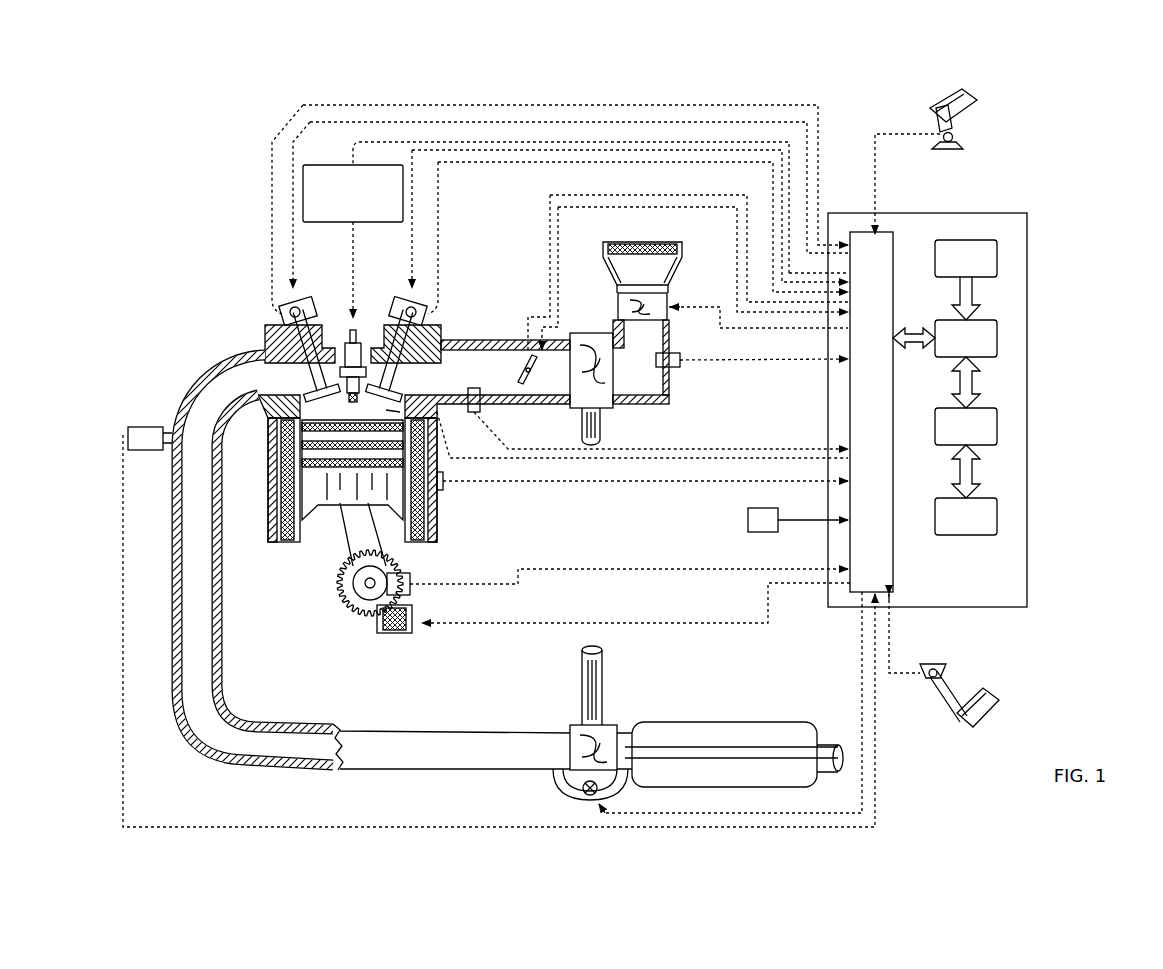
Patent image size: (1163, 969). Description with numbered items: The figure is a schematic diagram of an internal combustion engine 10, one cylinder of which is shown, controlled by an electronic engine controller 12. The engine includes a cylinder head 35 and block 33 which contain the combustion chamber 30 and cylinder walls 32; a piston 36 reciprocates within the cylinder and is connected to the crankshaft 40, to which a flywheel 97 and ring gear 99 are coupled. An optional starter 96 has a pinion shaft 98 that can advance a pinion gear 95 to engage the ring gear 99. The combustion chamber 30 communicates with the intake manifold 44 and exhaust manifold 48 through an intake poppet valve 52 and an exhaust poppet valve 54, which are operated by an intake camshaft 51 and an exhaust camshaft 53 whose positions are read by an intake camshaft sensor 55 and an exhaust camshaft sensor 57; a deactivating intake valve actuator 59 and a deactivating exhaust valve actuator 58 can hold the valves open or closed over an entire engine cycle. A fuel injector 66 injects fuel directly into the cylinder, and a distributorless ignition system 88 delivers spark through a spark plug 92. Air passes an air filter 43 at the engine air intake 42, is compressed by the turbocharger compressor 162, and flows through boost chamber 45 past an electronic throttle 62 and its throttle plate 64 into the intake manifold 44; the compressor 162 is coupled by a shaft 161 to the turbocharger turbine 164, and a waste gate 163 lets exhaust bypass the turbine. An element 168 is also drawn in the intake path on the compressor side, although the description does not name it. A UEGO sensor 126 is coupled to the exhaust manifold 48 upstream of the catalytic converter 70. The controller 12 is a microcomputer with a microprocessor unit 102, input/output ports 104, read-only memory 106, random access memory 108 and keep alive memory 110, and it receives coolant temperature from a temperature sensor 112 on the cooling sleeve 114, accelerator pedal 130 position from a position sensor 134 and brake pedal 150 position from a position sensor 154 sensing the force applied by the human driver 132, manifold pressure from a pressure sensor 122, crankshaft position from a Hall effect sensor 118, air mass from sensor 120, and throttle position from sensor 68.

The internal combustion engine 10 is at (210, 284).
The electronic engine controller 12 is at (1027, 222).
The combustion chamber 30 is at (270, 500).
The cylinder walls 32 is at (306, 525).
The block 33 is at (266, 450).
The cylinder head 35 is at (262, 324).
The piston 36 is at (337, 500).
The crankshaft 40 is at (360, 600).
The engine air intake 42 is at (663, 252).
The air filter 43 is at (660, 254).
The intake manifold 44 is at (460, 386).
The boost chamber 45 is at (560, 381).
The exhaust manifold 48 is at (244, 386).
The intake camshaft 51 is at (404, 300).
The intake poppet valve 52 is at (403, 322).
The exhaust camshaft 53 is at (300, 298).
The exhaust poppet valve 54 is at (290, 333).
The intake camshaft sensor 55 is at (420, 305).
The exhaust camshaft sensor 57 is at (284, 316).
The deactivating exhaust valve actuator 58 is at (302, 312).
The deactivating intake valve actuator 59 is at (405, 312).
The electronic throttle 62 is at (516, 359).
The throttle plate 64 is at (520, 377).
The fuel injector 66 is at (386, 412).
The throttle position sensor 68 is at (548, 360).
The catalytic converter 70 is at (672, 722).
The distributorless ignition system 88 is at (315, 165).
The spark plug 92 is at (357, 330).
The pinion gear 95 is at (397, 636).
The starter 96 is at (408, 633).
The flywheel 97 is at (352, 577).
The pinion shaft 98 is at (386, 633).
The ring gear 99 is at (372, 614).
The microprocessor unit 102 is at (997, 340).
The input/output ports 104 is at (893, 240).
The read-only memory 106 is at (997, 258).
The random access memory 108 is at (997, 427).
The keep alive memory 110 is at (997, 518).
The temperature sensor 112 is at (443, 476).
The cooling sleeve 114 is at (436, 490).
The Hall effect sensor 118 is at (410, 575).
The air mass sensor 120 is at (678, 354).
The pressure sensor 122 is at (474, 412).
The UEGO sensor 126 is at (128, 433).
The accelerator pedal 130 is at (979, 158).
The human driver 132 is at (977, 101).
The position sensor 134 is at (955, 140).
The brake pedal 150 is at (944, 664).
The position sensor 154 is at (928, 668).
The shaft 161 is at (601, 425).
The turbocharger compressor 162 is at (648, 404).
The waste gate 163 is at (583, 797).
The turbocharger turbine 164 is at (570, 730).
The charge air cooler 168 is at (668, 302).